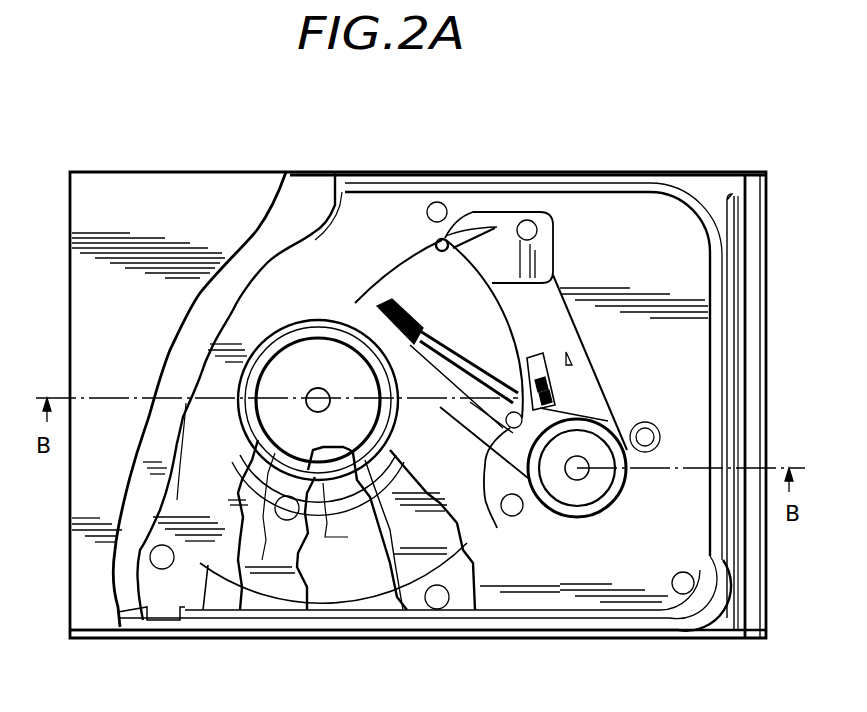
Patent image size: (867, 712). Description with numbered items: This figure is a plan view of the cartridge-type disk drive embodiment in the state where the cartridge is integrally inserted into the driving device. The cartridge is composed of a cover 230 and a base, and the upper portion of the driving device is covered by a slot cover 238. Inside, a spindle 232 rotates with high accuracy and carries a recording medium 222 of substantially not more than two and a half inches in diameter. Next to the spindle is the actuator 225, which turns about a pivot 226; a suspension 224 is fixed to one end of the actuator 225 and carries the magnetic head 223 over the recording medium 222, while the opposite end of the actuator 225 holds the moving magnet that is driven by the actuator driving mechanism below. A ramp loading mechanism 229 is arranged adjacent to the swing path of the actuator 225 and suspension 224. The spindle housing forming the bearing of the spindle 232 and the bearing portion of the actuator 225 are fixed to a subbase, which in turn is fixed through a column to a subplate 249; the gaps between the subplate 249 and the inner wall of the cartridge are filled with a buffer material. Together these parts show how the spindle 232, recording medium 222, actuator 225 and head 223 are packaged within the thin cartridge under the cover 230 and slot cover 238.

The slot cover 238 is at (161, 184).
The cover 230 is at (291, 172).
The subplate 249 is at (642, 230).
The spindle 232 is at (318, 358).
The recording medium 222 is at (352, 585).
The ramp loading mechanism 229 is at (498, 242).
The magnetic head 223 is at (408, 314).
The suspension 224 is at (448, 355).
The actuator 225 is at (510, 496).
The pivot 226 is at (577, 470).